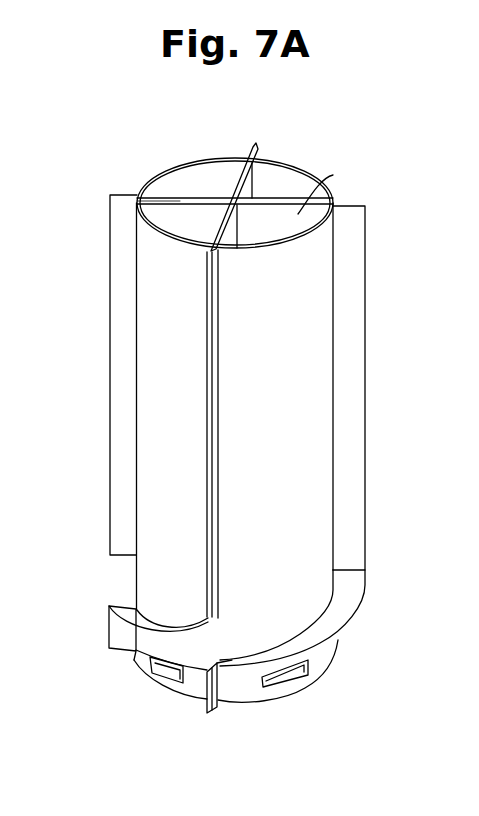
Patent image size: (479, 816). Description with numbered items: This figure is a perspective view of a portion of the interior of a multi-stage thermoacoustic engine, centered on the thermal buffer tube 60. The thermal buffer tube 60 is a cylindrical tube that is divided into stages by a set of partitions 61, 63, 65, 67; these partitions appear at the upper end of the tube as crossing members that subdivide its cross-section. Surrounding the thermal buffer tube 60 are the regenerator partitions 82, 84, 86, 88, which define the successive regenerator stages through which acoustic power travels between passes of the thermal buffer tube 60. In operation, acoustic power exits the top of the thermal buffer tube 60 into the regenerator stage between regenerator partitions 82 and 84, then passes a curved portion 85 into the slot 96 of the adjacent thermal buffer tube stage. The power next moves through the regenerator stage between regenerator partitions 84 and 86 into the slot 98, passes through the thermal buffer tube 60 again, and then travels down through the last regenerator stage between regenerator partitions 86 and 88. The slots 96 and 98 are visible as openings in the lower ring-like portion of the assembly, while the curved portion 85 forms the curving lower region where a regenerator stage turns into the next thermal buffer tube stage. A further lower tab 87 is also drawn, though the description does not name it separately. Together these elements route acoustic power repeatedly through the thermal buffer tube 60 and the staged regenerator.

The thermal buffer tube 60 is at (292, 187).
The partition 61 is at (333, 175).
The partition 63 is at (232, 231).
The partition 65 is at (175, 197).
The partition 67 is at (238, 180).
The regenerator partition 82 is at (258, 147).
The regenerator partition 84 is at (365, 430).
The curved portion 85 is at (350, 600).
The regenerator partition 86 is at (210, 480).
The lower left tab 87 is at (153, 628).
The regenerator partition 88 is at (118, 288).
The slot 96 is at (307, 683).
The slot 98 is at (165, 673).